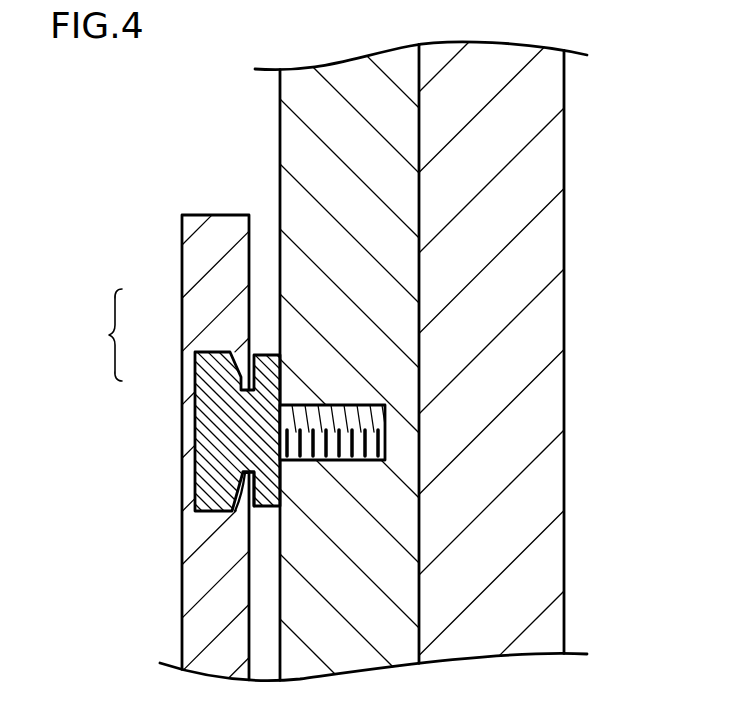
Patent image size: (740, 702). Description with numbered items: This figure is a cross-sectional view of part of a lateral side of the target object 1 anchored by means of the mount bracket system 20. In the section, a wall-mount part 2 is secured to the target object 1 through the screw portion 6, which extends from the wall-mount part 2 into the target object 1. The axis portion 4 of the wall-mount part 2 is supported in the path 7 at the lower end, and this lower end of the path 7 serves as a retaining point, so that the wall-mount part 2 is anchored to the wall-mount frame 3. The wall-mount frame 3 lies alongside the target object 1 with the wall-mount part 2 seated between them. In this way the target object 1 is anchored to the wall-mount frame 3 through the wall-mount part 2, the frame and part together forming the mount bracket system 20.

The target object 1 is at (549, 157).
The wall-mount part 2 is at (188, 377).
The wall-mount frame 3 is at (193, 322).
The axis portion 4 is at (243, 507).
The screw portion 6 is at (345, 406).
The path 7 is at (244, 458).
The mount bracket system 20 is at (96, 335).